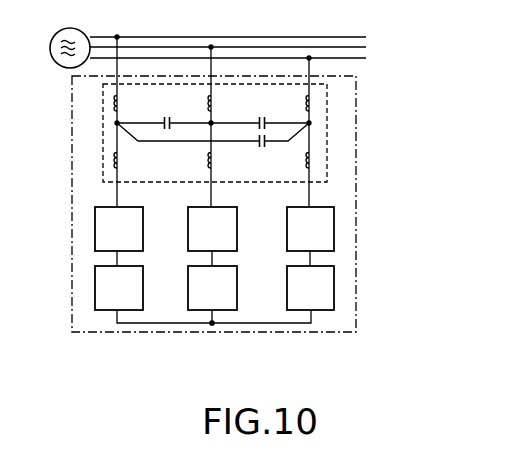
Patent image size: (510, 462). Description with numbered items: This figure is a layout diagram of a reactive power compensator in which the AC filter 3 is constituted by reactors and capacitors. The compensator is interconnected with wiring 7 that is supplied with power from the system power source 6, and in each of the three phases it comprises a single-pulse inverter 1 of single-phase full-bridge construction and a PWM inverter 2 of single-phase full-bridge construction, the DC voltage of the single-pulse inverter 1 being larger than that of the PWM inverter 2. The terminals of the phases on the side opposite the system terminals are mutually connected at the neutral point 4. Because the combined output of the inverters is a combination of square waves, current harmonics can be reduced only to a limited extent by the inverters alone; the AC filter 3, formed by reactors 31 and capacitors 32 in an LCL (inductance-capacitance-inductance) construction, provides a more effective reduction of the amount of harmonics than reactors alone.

The single-pulse inverter 1 is at (143, 212).
The PWM inverter 2 is at (143, 271).
The AC filter 3 is at (102, 104).
The neutral point 4 is at (210, 322).
The system power source 6 is at (50, 48).
The wiring 7 is at (162, 37).
The reactor 31 is at (119, 103).
The capacitor 32 is at (167, 117).